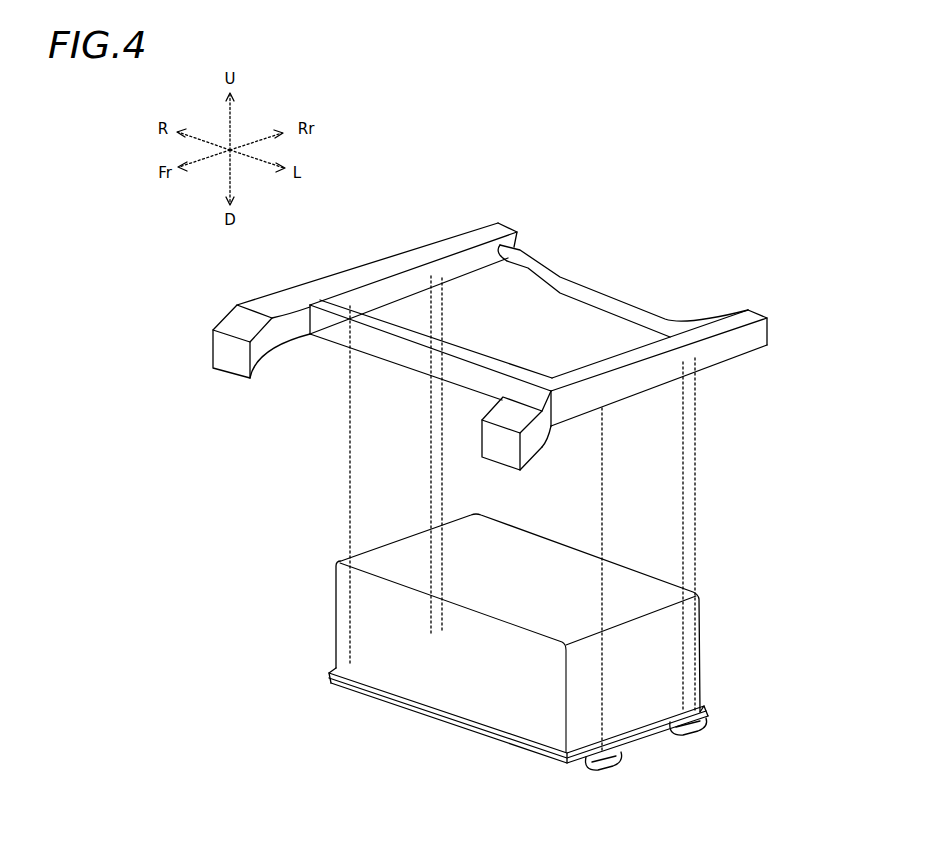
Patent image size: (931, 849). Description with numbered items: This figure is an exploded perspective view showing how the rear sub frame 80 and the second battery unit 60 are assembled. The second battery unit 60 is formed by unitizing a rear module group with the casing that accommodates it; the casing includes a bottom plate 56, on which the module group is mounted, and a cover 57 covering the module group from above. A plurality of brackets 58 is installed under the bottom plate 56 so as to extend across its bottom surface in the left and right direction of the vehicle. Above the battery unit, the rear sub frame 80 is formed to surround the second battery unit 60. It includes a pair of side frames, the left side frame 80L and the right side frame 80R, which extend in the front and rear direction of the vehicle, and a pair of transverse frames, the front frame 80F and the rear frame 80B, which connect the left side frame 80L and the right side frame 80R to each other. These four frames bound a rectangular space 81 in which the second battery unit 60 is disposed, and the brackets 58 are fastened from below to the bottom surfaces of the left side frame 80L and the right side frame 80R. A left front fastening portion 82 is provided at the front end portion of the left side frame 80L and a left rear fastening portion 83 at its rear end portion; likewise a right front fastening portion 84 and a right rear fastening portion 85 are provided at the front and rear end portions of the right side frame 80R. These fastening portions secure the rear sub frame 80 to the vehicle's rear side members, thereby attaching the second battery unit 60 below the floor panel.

The rear sub frame 80 is at (774, 325).
The right side frame 80R is at (422, 262).
The front frame 80F is at (399, 353).
The left side frame 80L is at (630, 385).
The rear frame 80B is at (608, 303).
The rectangular space 81 is at (535, 333).
The left front fastening portion 82 is at (590, 417).
The left rear fastening portion 83 is at (696, 370).
The right front fastening portion 84 is at (382, 310).
The right rear fastening portion 85 is at (447, 283).
The second battery unit 60 is at (705, 610).
The cover 57 is at (375, 620).
The bottom plate 56 is at (525, 757).
The brackets 58 is at (620, 760).